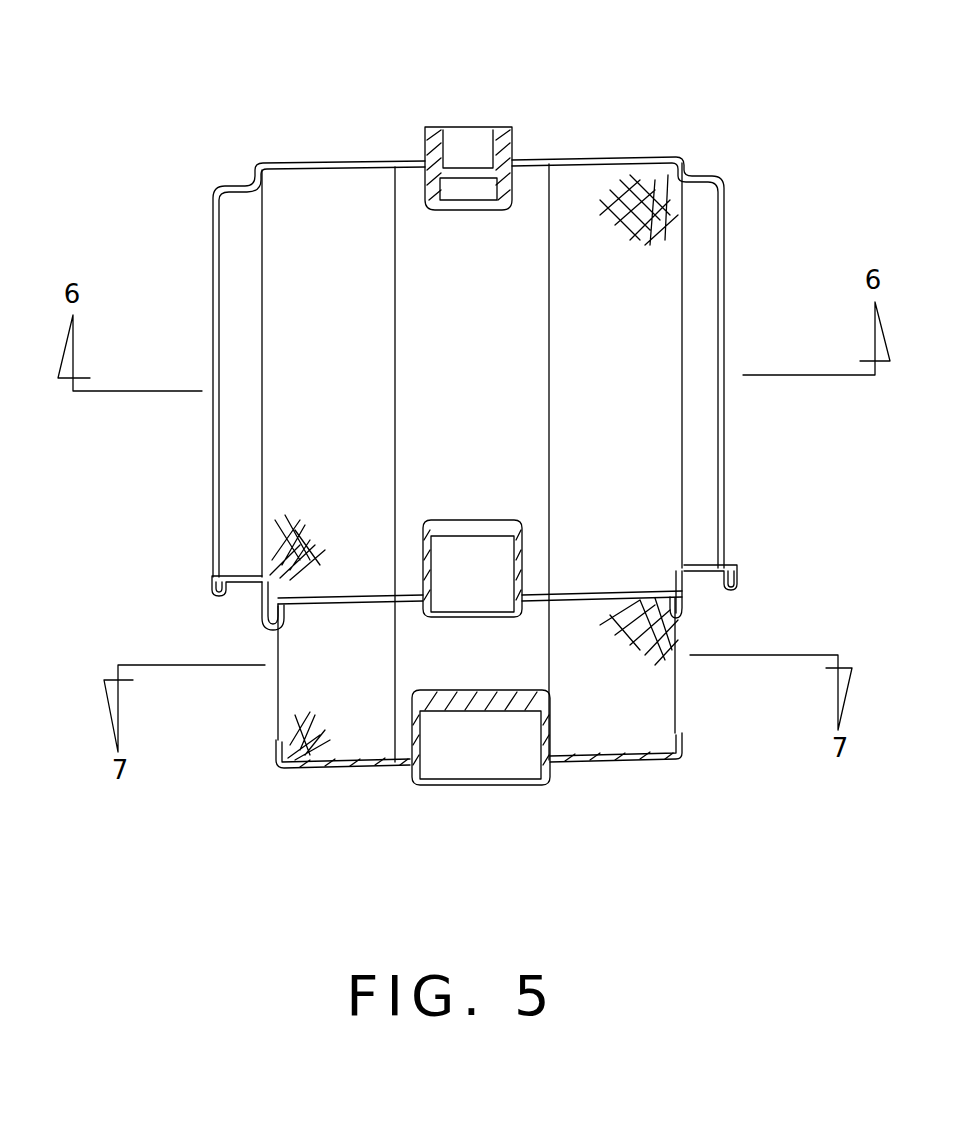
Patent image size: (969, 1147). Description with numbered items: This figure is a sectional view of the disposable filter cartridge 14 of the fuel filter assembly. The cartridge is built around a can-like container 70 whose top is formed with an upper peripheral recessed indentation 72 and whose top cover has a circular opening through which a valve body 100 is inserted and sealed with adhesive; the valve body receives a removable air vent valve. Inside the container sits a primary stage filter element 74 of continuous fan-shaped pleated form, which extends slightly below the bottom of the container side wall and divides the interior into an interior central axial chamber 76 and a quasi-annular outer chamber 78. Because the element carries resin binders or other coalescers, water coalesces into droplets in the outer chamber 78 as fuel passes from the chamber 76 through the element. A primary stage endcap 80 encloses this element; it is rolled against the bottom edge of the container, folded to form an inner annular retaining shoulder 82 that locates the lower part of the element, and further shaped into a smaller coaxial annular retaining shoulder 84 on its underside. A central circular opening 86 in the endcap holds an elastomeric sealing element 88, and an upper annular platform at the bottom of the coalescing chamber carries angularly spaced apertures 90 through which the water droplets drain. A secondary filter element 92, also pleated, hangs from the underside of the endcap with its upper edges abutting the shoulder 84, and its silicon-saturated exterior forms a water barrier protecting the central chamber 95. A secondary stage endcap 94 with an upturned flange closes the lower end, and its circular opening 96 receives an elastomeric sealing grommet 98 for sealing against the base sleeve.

The disposable filter cartridge 14 is at (272, 118).
The can-like container 70 is at (218, 452).
The upper peripheral recessed indentation 72 is at (693, 172).
The primary stage filter element 74 is at (645, 465).
The interior central axial chamber 76 is at (497, 350).
The quasi-annular outer chamber 78 is at (697, 300).
The primary stage endcap 80 is at (590, 592).
The inner annular retaining shoulder 82 is at (680, 575).
The annular retaining shoulder 84 is at (283, 620).
The central circular opening 86 is at (410, 598).
The elastomeric sealing element 88 is at (522, 530).
The angularly spaced apertures 90 is at (227, 578).
The secondary filter element 92 is at (302, 733).
The secondary stage endcap 94 is at (356, 770).
The central chamber 95 is at (510, 668).
The circular opening 96 is at (545, 758).
The elastomeric sealing grommet 98 is at (412, 715).
The valve body 100 is at (512, 135).